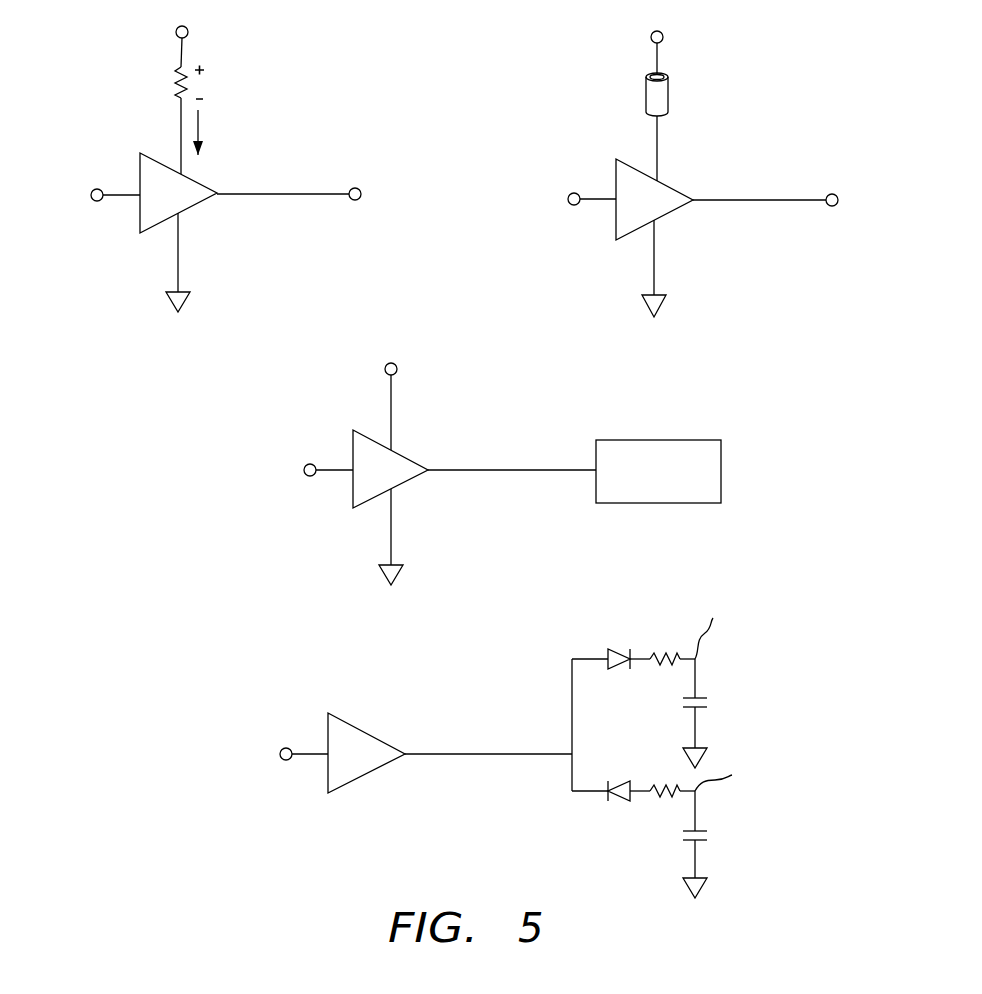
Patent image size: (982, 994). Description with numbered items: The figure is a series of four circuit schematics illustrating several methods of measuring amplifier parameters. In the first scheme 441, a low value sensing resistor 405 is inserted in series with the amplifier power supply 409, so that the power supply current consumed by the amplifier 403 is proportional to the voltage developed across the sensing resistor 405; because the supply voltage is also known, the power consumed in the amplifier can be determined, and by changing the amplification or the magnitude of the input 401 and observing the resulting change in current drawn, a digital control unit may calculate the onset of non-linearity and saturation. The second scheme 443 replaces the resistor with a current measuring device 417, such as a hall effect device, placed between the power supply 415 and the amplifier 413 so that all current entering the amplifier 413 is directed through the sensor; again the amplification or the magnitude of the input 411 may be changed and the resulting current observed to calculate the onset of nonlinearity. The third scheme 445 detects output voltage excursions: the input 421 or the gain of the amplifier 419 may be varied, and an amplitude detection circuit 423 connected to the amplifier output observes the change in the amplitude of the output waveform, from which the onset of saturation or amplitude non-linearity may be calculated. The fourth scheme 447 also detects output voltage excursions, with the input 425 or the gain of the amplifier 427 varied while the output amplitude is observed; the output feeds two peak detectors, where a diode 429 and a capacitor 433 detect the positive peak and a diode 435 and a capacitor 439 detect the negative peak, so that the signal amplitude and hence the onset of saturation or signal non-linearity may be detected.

The input 401 is at (97, 188).
The amplifier 403 is at (170, 208).
The low value sensing resistor 405 is at (231, 83).
The amplifier power supply 409 is at (206, 19).
The input 411 is at (574, 192).
The amplifier 413 is at (645, 211).
The power supply 415 is at (681, 22).
The current measuring device 417 is at (663, 95).
The amplifier 419 is at (397, 472).
The input 421 is at (310, 463).
The amplitude detection circuit 423 is at (660, 440).
The input 425 is at (286, 746).
The amplifier 427 is at (360, 767).
The diode 429 is at (620, 650).
The capacitor 433 is at (710, 704).
The diode 435 is at (615, 802).
The capacitor 439 is at (710, 838).
The current detection scheme 441 is at (138, 100).
The current detection scheme 443 is at (614, 104).
The output voltage excursion detection scheme 445 is at (332, 378).
The output voltage excursion detection scheme 447 is at (308, 660).